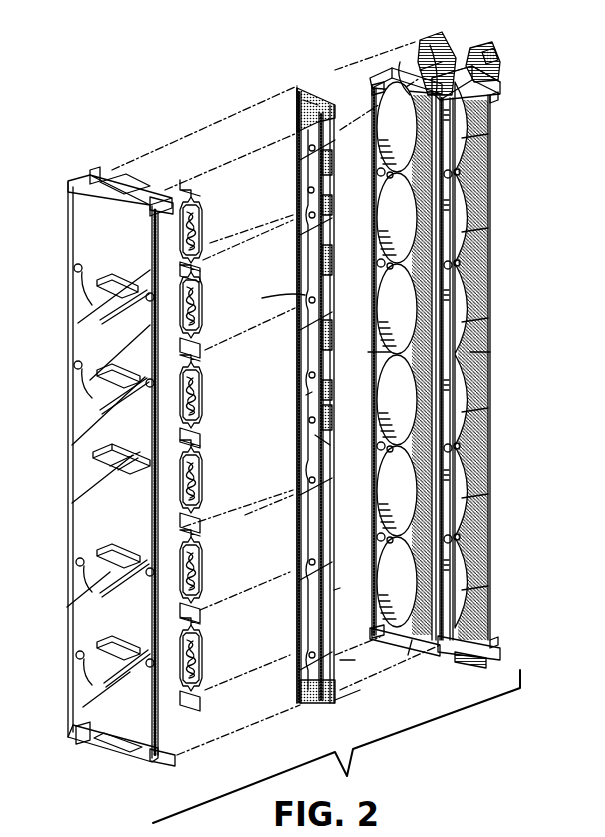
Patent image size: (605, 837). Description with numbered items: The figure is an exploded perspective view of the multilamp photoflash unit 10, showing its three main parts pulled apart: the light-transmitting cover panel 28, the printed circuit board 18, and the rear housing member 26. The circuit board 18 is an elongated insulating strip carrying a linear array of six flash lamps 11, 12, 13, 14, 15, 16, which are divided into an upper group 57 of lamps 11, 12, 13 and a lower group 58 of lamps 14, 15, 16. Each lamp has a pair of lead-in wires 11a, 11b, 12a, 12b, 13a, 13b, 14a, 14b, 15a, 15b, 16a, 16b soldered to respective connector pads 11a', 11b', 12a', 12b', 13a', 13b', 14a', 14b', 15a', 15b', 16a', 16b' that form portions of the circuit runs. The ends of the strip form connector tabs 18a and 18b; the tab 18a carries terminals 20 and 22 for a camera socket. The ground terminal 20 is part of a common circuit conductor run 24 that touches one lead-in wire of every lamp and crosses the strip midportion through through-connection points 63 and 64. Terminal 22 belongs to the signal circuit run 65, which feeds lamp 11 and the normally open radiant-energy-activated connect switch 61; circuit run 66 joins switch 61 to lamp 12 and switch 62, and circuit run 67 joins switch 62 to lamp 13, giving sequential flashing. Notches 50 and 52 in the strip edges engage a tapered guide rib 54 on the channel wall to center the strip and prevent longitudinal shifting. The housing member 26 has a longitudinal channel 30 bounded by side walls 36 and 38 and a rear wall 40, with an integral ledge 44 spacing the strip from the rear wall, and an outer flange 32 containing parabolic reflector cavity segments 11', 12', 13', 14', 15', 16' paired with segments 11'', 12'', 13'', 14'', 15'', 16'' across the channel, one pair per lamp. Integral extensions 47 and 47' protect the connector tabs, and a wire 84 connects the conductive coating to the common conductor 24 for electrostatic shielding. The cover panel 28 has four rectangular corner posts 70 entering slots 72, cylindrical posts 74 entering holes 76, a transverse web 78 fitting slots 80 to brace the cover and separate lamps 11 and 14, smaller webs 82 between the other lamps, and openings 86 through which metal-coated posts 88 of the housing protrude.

The multilamp photoflash unit 10 is at (426, 732).
The flash lamp 11 is at (208, 395).
The flash lamp 12 is at (206, 305).
The flash lamp 13 is at (209, 230).
The flash lamp 14 is at (208, 480).
The flash lamp 15 is at (206, 570).
The flash lamp 16 is at (208, 658).
The lead-in wire 11a is at (173, 348).
The lead-in wire 11b is at (212, 399).
The lead-in wire 12a is at (175, 263).
The lead-in wire 12b is at (210, 309).
The lead-in wire 13a is at (195, 167).
The lead-in wire 13b is at (213, 233).
The lead-in wire 14a is at (213, 497).
The lead-in wire 14b is at (176, 527).
The lead-in wire 15a is at (215, 586).
The lead-in wire 15b is at (176, 617).
The lead-in wire 16a is at (212, 674).
The lead-in wire 16b is at (178, 715).
The connector pad 11a' is at (284, 300).
The connector pad 11b' is at (286, 337).
The connector pad 12a' is at (279, 214).
The connector pad 12b' is at (294, 239).
The connector pad 13a' is at (278, 131).
The connector pad 13b' is at (293, 150).
The connector pad 14a' is at (281, 507).
The connector pad 14b' is at (293, 481).
The connector pad 15a' is at (288, 595).
The connector pad 15b' is at (292, 566).
The connector pad 16a' is at (363, 674).
The connector pad 16b' is at (289, 670).
The parabolic reflector cavity segment 11' is at (378, 309).
The parabolic reflector cavity segment 12' is at (378, 218).
The parabolic reflector cavity segment 13' is at (379, 127).
The parabolic reflector cavity segment 14' is at (378, 400).
The parabolic reflector cavity segment 15' is at (378, 491).
The parabolic reflector cavity segment 16' is at (377, 582).
The parabolic reflector cavity segment 11'' is at (493, 321).
The parabolic reflector cavity segment 12'' is at (492, 232).
The parabolic reflector cavity segment 13'' is at (494, 140).
The parabolic reflector cavity segment 14'' is at (493, 412).
The parabolic reflector cavity segment 15'' is at (494, 497).
The parabolic reflector cavity segment 16'' is at (494, 589).
The printed circuit board 18 is at (328, 72).
The connector tab 18a is at (336, 688).
The connector tab 18b is at (298, 100).
The electrical terminal 20 is at (303, 85).
The electrical terminal 22 is at (325, 106).
The common circuit conductor run 24 is at (308, 285).
The rear housing member 26 is at (446, 363).
The light-transmitting cover panel 28 is at (72, 215).
The longitudinal channel 30 is at (422, 90).
The outer flange 32 is at (338, 385).
The side wall 36 is at (334, 205).
The side wall 38 is at (470, 66).
The rear wall 40 is at (478, 56).
The ledge 44 is at (418, 94).
The integral extension 47 is at (488, 662).
The integral extension 47' is at (503, 50).
The notch 50 is at (307, 420).
The notch 52 is at (336, 412).
The guide rib 54 is at (390, 392).
The upper group of lamps 57 is at (0, 518).
The lower group of lamps 58 is at (0, 803).
The radiant-energy-activated connect switch 61 is at (334, 338).
The radiant-energy-activated connect switch 62 is at (333, 262).
The through-connection point 63 is at (312, 442).
The through-connection point 64 is at (307, 375).
The signal circuit conductor run 65 is at (307, 655).
The circuit run 66 is at (269, 295).
The circuit run 67 is at (334, 165).
The rectangular corner post 70 is at (94, 174).
The slot 72 is at (380, 78).
The cylindrical post 74 is at (75, 262).
The hole 76 is at (379, 168).
The transverse web 78 is at (128, 462).
The slot 80 is at (368, 352).
The transverse web 82 is at (118, 276).
The wire 84 is at (305, 190).
The opening 86 is at (136, 300).
The metal-coated post 88 is at (387, 176).